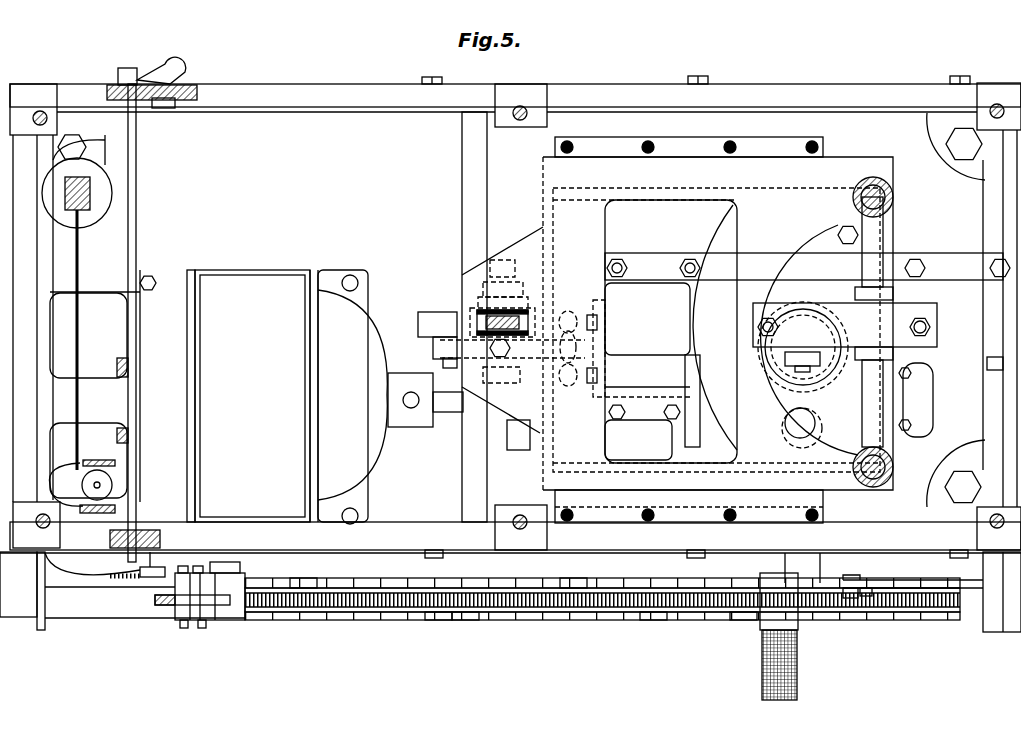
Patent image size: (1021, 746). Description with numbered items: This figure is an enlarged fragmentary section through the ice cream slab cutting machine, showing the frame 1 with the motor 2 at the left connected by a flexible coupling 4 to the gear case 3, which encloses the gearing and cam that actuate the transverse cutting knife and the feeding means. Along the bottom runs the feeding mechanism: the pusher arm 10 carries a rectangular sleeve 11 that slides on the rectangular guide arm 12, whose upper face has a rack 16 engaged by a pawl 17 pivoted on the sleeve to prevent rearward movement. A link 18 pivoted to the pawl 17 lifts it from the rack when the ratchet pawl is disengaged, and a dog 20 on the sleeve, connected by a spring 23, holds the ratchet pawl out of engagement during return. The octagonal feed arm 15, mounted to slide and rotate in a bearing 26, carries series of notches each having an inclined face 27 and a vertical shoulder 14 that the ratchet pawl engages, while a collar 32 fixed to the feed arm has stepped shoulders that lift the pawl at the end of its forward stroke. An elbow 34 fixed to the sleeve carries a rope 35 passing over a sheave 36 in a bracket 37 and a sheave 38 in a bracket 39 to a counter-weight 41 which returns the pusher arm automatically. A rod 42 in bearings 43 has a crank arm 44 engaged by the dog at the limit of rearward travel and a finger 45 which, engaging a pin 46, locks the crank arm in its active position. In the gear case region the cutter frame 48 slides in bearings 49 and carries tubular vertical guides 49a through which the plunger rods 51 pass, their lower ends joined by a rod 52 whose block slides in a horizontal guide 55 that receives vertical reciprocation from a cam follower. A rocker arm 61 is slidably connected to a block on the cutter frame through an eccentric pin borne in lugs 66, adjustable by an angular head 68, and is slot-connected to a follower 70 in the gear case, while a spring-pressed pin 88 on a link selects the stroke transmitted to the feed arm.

The frame 1 is at (340, 108).
The motor 2 is at (325, 397).
The gear case 3 is at (731, 332).
The flexible coupling 4 is at (515, 452).
The pusher arm 10 is at (22, 382).
The rectangular sleeve 11 is at (137, 620).
The rectangular guide arm 12 is at (320, 612).
The shoulders 14 is at (375, 620).
The feed arm 15 is at (725, 620).
The rack 16 is at (262, 578).
The pawl 17 is at (185, 606).
The link 18 is at (200, 628).
The dog 20 is at (150, 580).
The spring 23 is at (115, 582).
The bearing 26 is at (988, 602).
The inclined face 27 is at (485, 620).
The collar 32 is at (858, 584).
The elbow 34 is at (245, 552).
The rope or cable 35 is at (80, 333).
The sheave 36 is at (112, 475).
The bracket 37 is at (104, 452).
The sheave 38 is at (72, 215).
The bracket 39 is at (90, 190).
The counter-weight 41 is at (95, 212).
The rod 42 is at (137, 215).
The bearings 43 is at (160, 108).
The crank arm 44 is at (135, 572).
The finger 45 is at (182, 66).
The pin 46 is at (135, 72).
The cutter frame 48 is at (590, 240).
The bearings 49 is at (686, 150).
The vertically disposed guide 49a is at (895, 200).
The plunger rods 51 is at (860, 205).
The rod 52 is at (872, 405).
The horizontal guide 55 is at (845, 325).
The rocker arm 61 is at (422, 318).
The lugs 66 is at (485, 300).
The angular head 68 is at (507, 360).
The follower 70 is at (440, 345).
The spring-pressed pin 88 is at (762, 655).